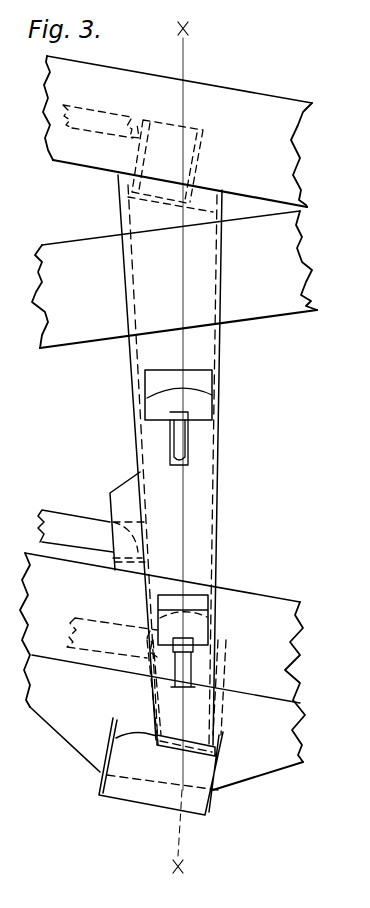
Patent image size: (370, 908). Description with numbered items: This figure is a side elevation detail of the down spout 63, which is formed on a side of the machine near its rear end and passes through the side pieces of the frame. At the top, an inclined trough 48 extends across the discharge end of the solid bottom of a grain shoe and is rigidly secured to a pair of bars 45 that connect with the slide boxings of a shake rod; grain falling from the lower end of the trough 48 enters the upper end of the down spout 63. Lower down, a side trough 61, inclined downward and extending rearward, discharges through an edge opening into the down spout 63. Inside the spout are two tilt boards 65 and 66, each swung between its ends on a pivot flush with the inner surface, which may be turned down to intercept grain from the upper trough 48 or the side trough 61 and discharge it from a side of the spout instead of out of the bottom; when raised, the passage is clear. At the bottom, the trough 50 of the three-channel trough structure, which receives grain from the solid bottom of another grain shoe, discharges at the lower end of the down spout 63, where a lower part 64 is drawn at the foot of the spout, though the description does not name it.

The bars 45 is at (101, 115).
The trough 48 is at (172, 155).
The trough 50 is at (147, 712).
The trough 61 is at (63, 506).
The down spout 63 is at (219, 474).
The bottom cup 64 is at (130, 797).
The tilt board 65 is at (200, 405).
The tilt board 66 is at (188, 623).